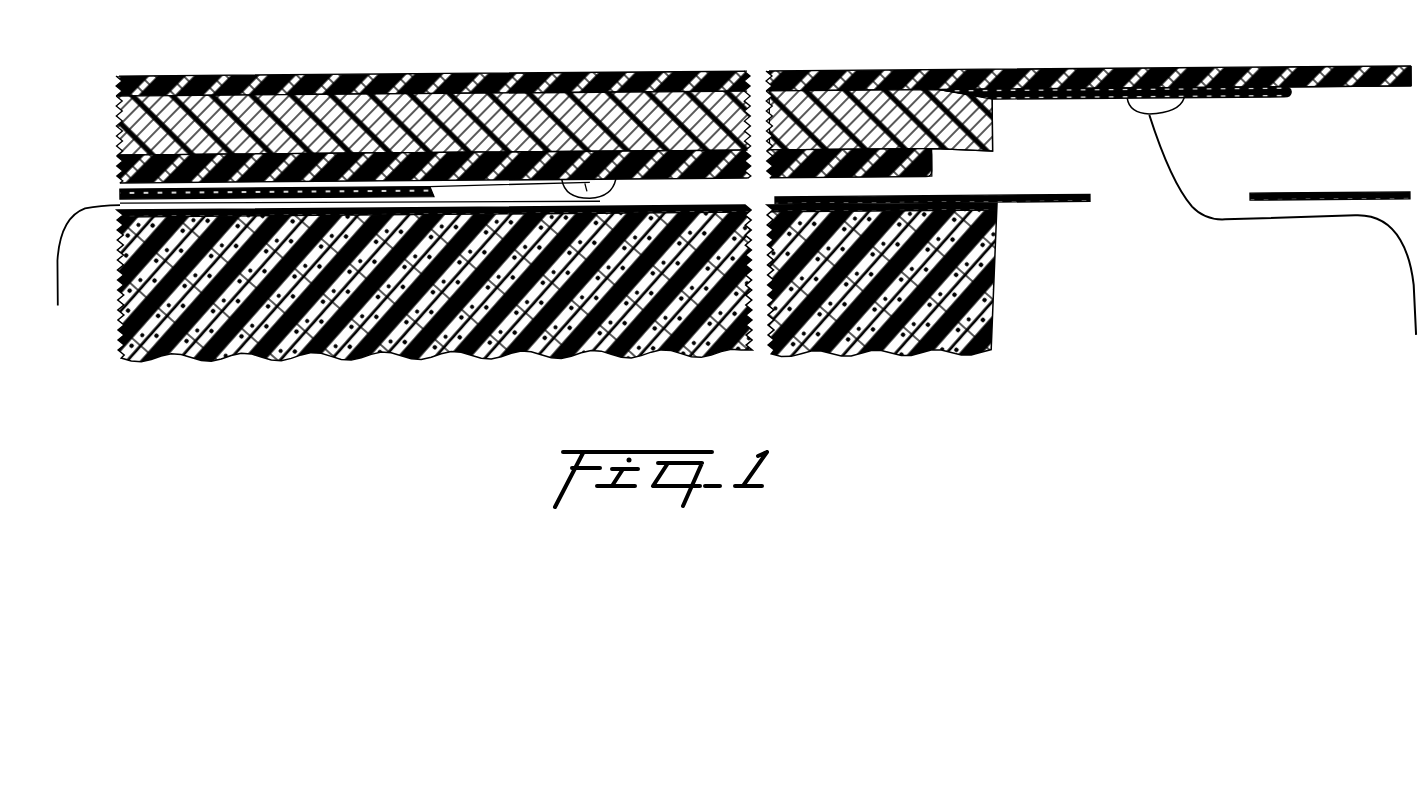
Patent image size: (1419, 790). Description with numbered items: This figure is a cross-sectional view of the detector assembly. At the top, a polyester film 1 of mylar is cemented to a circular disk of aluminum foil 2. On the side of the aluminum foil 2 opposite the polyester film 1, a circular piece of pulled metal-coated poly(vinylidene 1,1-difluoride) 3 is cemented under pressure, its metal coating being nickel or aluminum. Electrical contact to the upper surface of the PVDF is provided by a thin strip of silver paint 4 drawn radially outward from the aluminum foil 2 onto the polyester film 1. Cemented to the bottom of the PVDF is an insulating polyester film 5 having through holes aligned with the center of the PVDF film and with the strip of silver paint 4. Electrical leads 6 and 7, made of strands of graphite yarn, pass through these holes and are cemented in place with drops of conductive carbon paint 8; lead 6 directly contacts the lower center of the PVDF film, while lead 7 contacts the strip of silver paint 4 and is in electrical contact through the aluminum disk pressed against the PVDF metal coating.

The polyester film 1 is at (553, 72).
The aluminum foil 2 is at (112, 118).
The pulled metal-coated poly(vinylidene 1,1-difluoride) 3 is at (112, 172).
The strip of silver paint 4 is at (1073, 103).
The insulating polyester film 5 is at (118, 190).
The electrical lead 6 is at (62, 277).
The electrical lead 7 is at (1170, 167).
The conductive carbon paint 8 is at (605, 183).